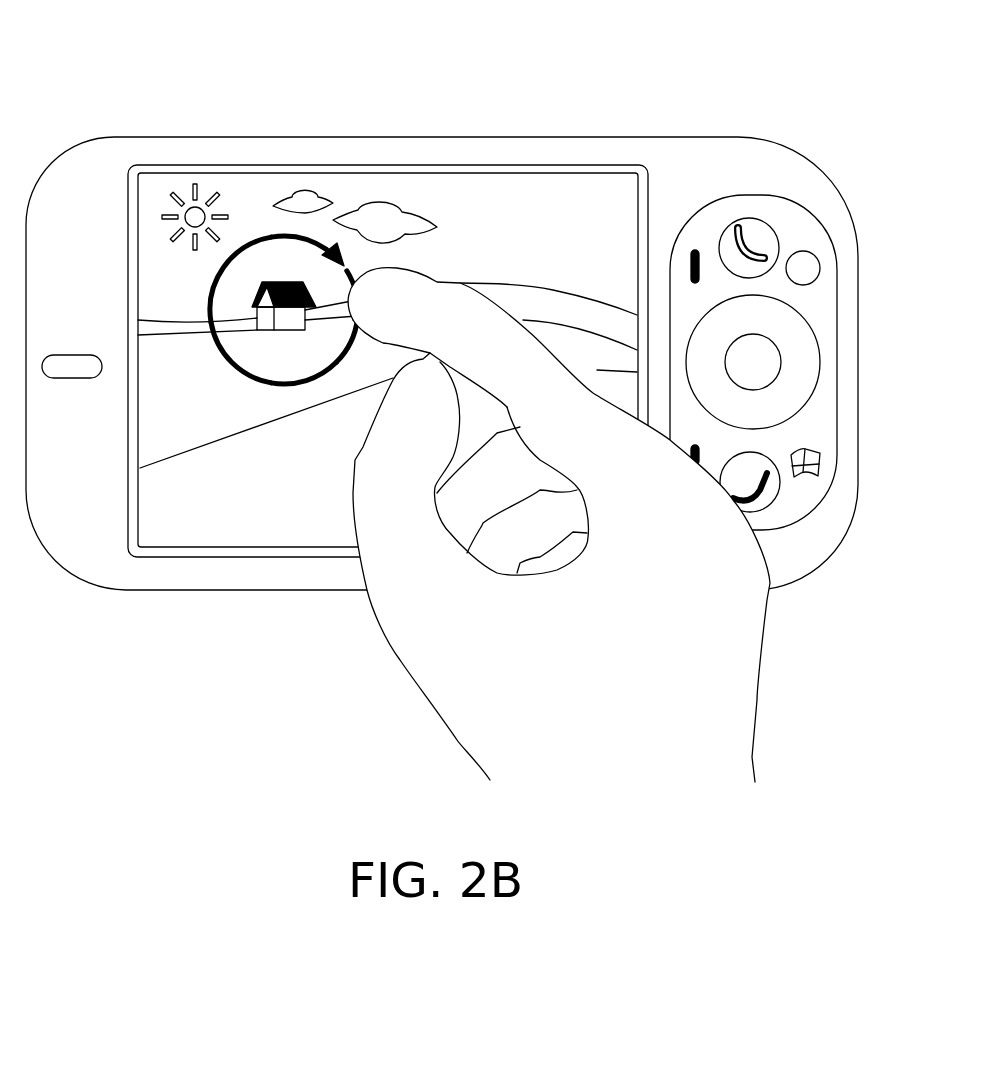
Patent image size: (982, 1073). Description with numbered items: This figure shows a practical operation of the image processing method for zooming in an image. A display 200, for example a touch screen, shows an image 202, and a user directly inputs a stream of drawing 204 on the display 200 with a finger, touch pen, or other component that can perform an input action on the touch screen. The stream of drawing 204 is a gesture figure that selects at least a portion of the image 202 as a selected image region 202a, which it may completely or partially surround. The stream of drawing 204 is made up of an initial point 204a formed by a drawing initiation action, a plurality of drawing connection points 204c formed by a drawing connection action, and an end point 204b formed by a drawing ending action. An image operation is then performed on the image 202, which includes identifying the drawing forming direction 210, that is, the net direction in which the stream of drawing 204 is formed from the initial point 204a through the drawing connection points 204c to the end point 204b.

The display 200 is at (472, 175).
The image 202 is at (556, 200).
The selected image region 202a is at (288, 275).
The stream of drawing 204 is at (247, 243).
The initial point 204a is at (363, 337).
The end point 204b is at (343, 262).
The drawing connection points 204c is at (223, 370).
The drawing forming direction 210 is at (320, 193).